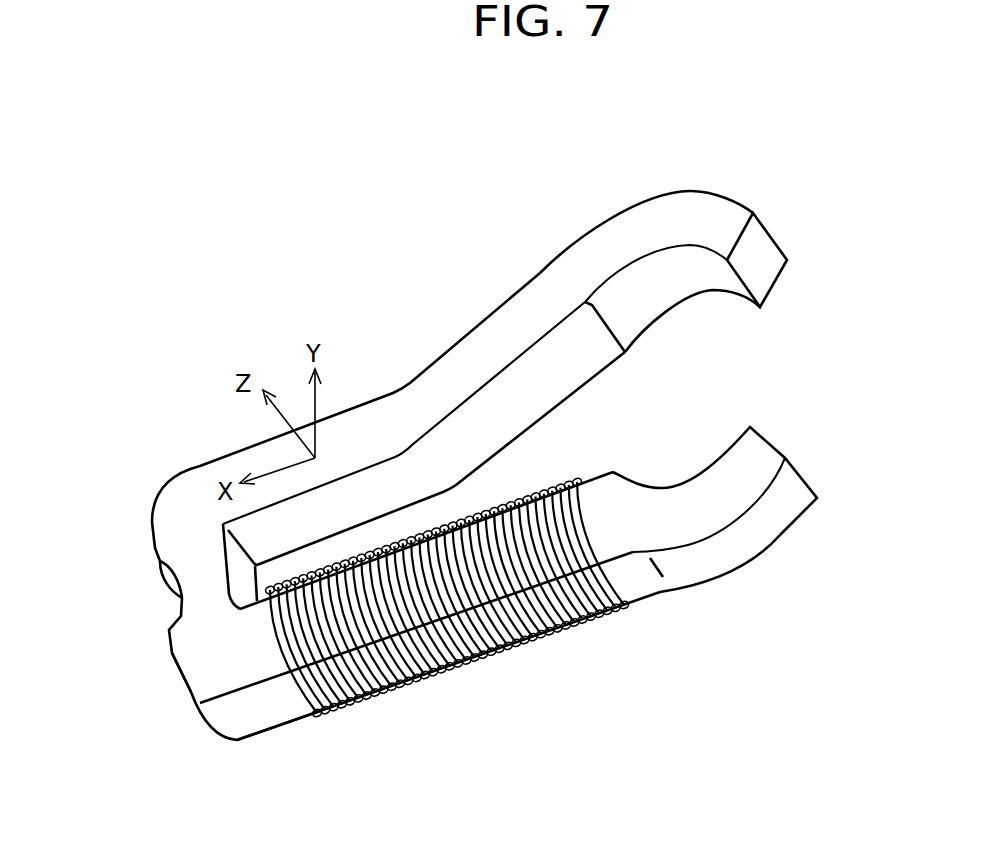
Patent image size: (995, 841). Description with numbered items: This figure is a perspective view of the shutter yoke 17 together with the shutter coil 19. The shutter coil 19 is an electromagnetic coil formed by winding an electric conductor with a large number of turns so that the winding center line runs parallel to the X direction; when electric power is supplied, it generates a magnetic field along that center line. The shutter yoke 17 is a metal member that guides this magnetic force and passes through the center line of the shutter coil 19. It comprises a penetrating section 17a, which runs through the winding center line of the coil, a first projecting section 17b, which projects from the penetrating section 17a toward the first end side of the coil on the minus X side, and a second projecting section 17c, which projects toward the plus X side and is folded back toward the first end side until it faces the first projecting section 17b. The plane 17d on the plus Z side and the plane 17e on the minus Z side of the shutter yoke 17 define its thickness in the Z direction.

The shutter yoke 17 is at (213, 580).
The penetrating section 17a is at (620, 573).
The first projecting section 17b is at (770, 518).
The second projecting section 17c is at (677, 262).
The plane of the shutter yoke on the +Z side 17d is at (232, 677).
The plane of the shutter yoke on the −Z side 17e is at (272, 731).
The shutter coil 19 is at (474, 660).